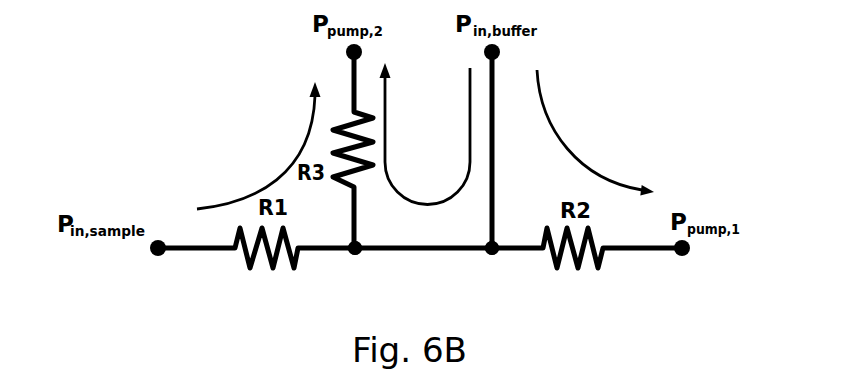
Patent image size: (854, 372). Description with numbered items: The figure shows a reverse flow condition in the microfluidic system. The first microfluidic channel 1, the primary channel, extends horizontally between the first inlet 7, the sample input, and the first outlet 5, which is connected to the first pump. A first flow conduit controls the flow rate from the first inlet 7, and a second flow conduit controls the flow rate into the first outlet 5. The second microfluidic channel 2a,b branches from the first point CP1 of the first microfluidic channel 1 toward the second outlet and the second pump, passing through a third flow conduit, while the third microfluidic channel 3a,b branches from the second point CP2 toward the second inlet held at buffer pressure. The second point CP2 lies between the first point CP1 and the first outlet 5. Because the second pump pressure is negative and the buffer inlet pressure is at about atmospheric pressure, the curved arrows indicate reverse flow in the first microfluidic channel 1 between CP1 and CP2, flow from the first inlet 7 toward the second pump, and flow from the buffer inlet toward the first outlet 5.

The first microfluidic channel 1 is at (189, 254).
The first inlet 7 is at (150, 253).
The first outlet 5 is at (685, 257).
The second microfluidic channel 2a,b is at (347, 87).
The third microfluidic channel 3a,b is at (495, 128).
The first point CP1 is at (360, 253).
The second point CP2 is at (497, 253).